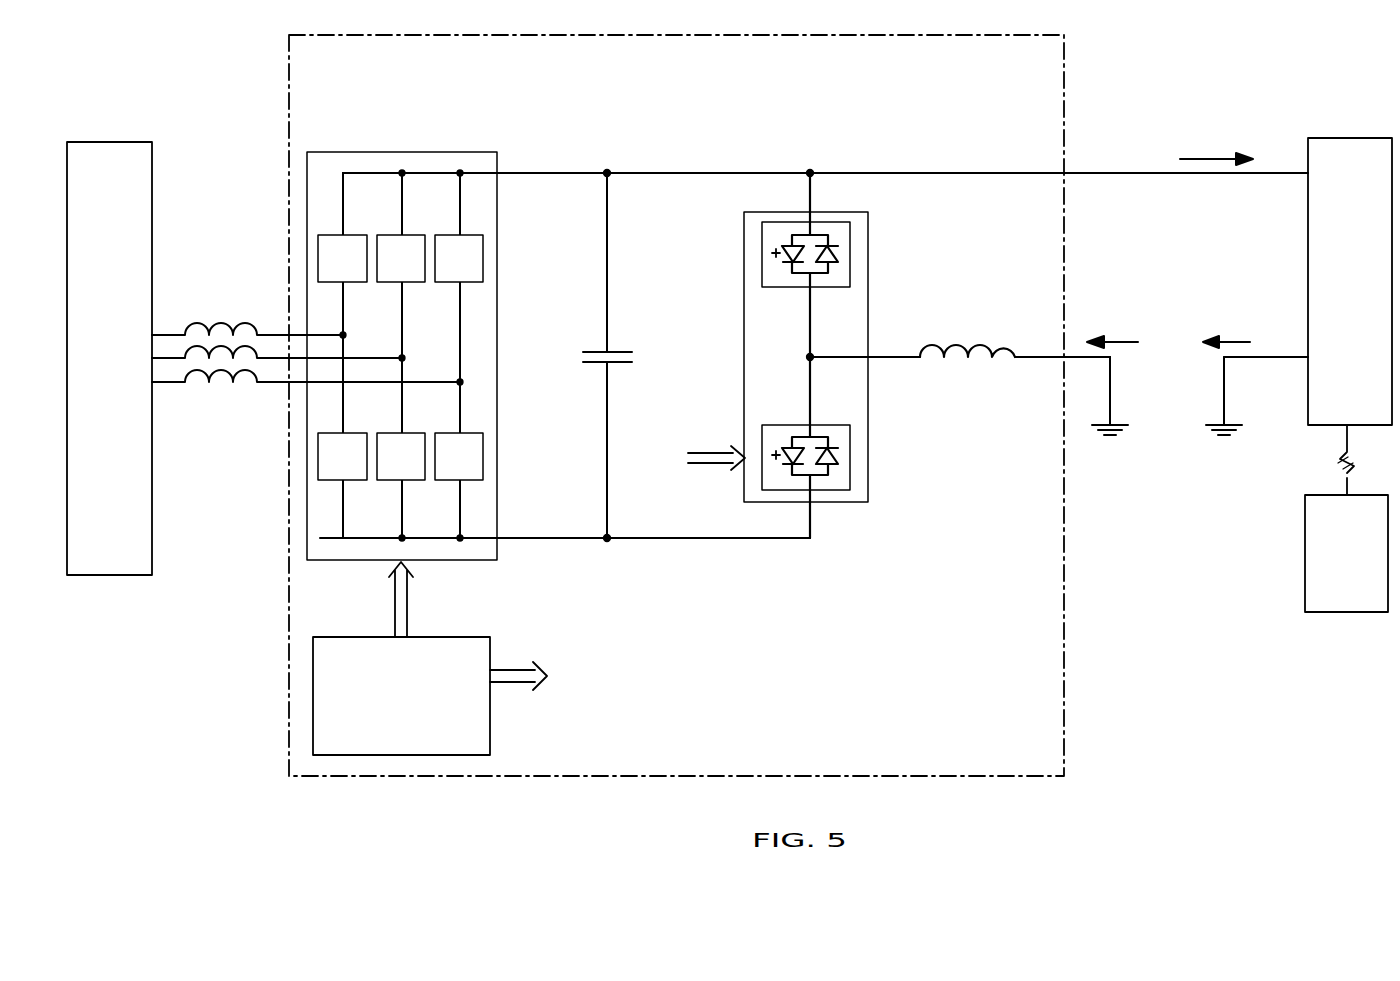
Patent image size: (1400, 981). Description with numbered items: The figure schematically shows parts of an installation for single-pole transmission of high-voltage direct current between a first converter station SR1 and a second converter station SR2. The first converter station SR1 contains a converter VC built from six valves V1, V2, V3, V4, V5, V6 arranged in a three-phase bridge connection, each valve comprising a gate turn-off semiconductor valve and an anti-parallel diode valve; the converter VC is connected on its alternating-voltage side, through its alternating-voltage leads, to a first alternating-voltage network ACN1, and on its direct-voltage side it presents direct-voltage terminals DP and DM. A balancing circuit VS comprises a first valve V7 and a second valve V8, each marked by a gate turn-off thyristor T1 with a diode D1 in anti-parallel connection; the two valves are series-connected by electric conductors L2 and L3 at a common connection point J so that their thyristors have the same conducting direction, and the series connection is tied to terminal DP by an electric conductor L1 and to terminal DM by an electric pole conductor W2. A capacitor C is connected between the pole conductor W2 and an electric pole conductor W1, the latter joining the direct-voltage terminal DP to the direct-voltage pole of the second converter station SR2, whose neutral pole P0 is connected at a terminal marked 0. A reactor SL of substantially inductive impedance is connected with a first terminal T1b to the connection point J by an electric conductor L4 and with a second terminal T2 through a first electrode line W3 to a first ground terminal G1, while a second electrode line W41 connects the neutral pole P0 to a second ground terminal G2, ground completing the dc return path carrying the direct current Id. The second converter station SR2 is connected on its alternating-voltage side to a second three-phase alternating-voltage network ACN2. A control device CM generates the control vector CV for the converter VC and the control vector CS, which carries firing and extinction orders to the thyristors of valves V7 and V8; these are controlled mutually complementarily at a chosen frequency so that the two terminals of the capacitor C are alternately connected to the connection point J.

The first alternating-voltage network ACN1 is at (115, 142).
The second three-phase alternating-voltage network ACN2 is at (1345, 612).
The first converter station SR1 is at (1064, 95).
The second converter station SR2 is at (1353, 138).
The converter VC is at (402, 313).
The valve V1 is at (342, 258).
The valve V2 is at (459, 456).
The valve V3 is at (401, 258).
The valve V4 is at (342, 456).
The valve V5 is at (459, 258).
The valve V6 is at (401, 456).
The direct-voltage terminal DP is at (500, 173).
The direct-voltage terminal DM is at (503, 540).
The electric pole conductor W1 is at (583, 173).
The electric pole conductor W2 is at (630, 540).
The first electrode line W3 is at (1082, 356).
The second electrode line W41 is at (1224, 380).
The capacitor C is at (622, 350).
The balancing circuit VS is at (820, 355).
The first valve V7 is at (780, 222).
The second valve V8 is at (780, 490).
The gate turn-off thyristor T1 is at (765, 275).
The first terminal T1b is at (907, 392).
The diode D1 is at (850, 275).
The electric conductor L1 is at (812, 178).
The electric conductor L2 is at (808, 315).
The electric conductor L3 is at (808, 400).
The electric conductor L4 is at (845, 356).
The common connection point J is at (812, 360).
The reactor SL is at (962, 345).
The second terminal T2 is at (1018, 356).
The first ground terminal G1 is at (1110, 440).
The second ground terminal G2 is at (1224, 440).
The neutral pole P0 is at (1302, 360).
The zero potential terminal 0 is at (1286, 335).
The direct current Id is at (1170, 240).
The control vector CS is at (681, 450).
The control vector CV is at (445, 588).
The control device CM is at (313, 727).